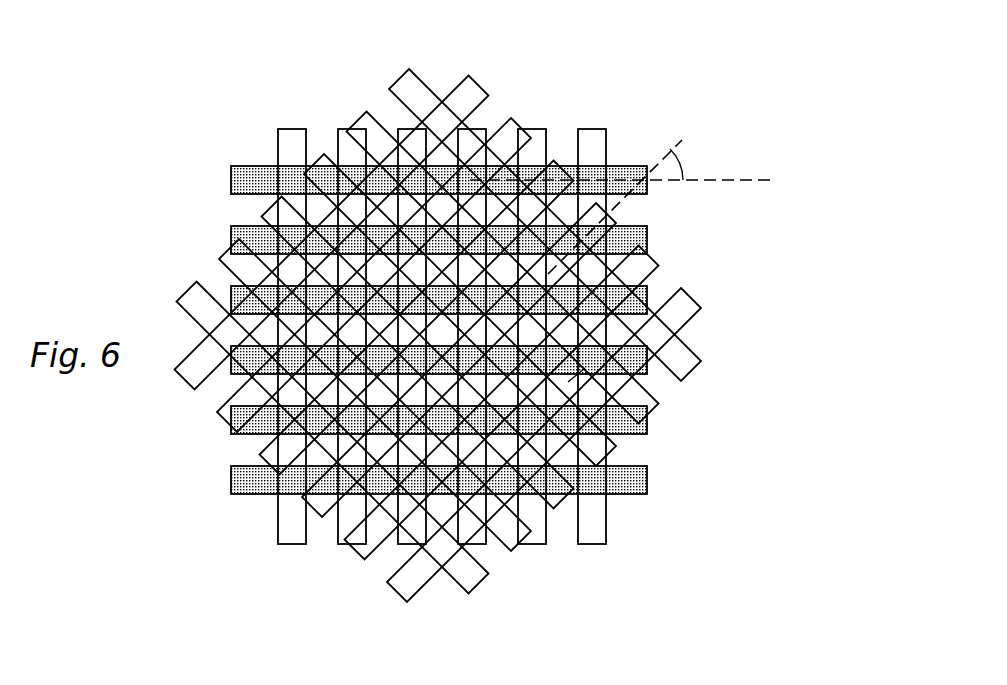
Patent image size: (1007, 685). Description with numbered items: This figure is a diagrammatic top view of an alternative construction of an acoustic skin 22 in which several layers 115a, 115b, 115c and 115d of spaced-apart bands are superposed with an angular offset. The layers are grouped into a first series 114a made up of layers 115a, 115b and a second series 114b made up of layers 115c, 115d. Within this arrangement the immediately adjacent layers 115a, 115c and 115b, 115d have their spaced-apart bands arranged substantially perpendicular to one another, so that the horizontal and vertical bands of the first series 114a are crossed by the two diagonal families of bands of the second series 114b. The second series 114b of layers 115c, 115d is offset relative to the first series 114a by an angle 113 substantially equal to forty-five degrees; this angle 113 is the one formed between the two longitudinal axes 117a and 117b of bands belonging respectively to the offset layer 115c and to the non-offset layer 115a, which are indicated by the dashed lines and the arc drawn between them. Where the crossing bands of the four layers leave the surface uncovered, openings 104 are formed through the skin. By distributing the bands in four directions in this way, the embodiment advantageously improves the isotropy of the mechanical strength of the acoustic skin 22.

The acoustic skin 22 is at (625, 103).
The openings 104 is at (673, 390).
The angle 113 is at (681, 163).
The first series of layers 114a is at (247, 592).
The second series of layers 114b is at (513, 640).
The layer 115a is at (237, 475).
The layer 115b is at (285, 523).
The layer 115c is at (358, 541).
The layer 115d is at (466, 568).
The longitudinal axis 117a is at (682, 140).
The longitudinal axis 117b is at (703, 182).